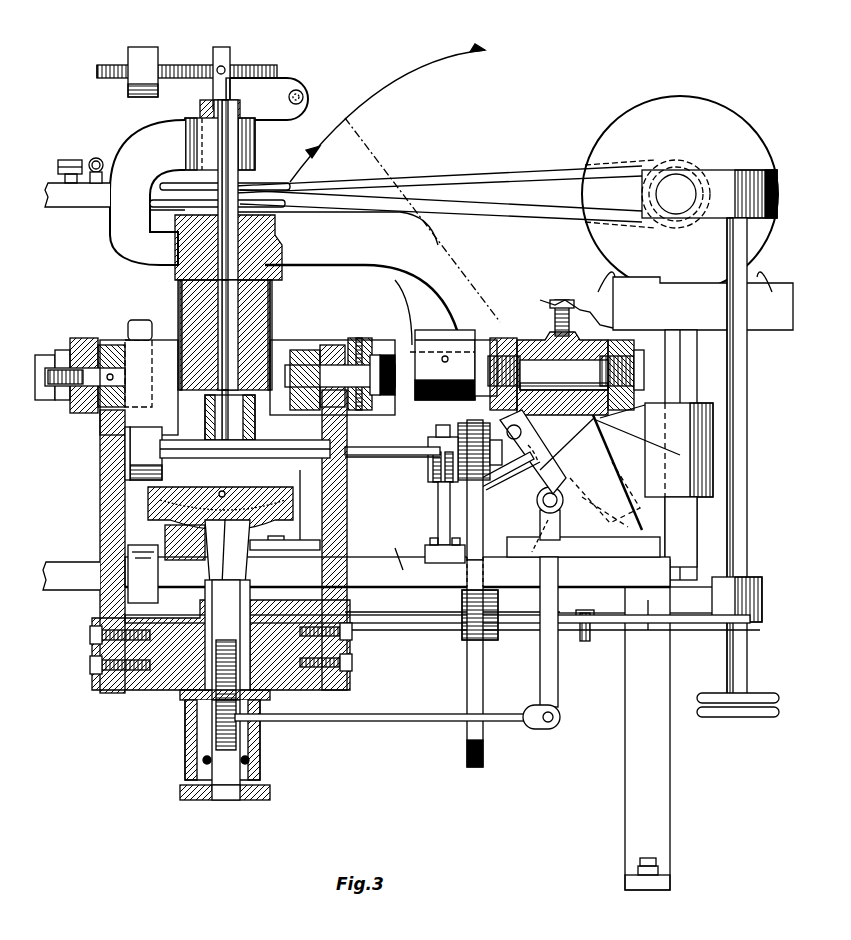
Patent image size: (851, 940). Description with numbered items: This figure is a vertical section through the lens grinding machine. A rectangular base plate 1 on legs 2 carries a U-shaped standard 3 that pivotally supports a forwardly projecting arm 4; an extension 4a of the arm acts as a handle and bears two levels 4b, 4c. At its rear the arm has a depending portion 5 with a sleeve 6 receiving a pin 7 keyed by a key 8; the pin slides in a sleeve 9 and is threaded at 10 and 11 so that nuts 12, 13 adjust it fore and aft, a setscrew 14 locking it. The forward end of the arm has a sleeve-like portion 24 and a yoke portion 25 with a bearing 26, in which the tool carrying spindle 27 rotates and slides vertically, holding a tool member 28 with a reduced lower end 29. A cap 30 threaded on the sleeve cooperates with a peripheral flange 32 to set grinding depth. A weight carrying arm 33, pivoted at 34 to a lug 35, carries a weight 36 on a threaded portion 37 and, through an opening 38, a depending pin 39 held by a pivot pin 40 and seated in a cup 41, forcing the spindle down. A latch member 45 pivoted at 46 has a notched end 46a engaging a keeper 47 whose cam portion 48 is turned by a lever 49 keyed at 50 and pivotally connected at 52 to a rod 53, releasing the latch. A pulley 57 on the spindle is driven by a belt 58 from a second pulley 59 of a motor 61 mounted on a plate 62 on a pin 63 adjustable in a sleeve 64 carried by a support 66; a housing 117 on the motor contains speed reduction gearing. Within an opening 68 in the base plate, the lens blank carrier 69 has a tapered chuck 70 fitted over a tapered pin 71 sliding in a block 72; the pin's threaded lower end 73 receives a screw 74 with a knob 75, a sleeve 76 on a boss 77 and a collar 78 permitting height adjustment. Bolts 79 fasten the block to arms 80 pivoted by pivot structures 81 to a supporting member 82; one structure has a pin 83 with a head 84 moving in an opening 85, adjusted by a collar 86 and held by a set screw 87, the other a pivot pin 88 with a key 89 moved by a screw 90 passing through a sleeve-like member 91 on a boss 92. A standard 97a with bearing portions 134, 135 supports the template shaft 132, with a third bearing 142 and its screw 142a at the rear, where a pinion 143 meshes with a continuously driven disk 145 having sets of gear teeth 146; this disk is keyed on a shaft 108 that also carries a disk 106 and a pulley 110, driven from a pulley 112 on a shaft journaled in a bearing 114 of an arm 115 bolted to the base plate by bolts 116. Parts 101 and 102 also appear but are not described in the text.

The base plate 1 is at (395, 551).
The legs 2 is at (640, 738).
The standard 3 is at (528, 480).
The arm 4 is at (380, 243).
The extension 4a is at (62, 196).
The level 4b is at (95, 158).
The level 4c is at (64, 162).
The depending portion 5 is at (432, 345).
The sleeve 6 is at (440, 375).
The pin 7 is at (484, 368).
The key 8 is at (448, 356).
The sleeve 9 is at (536, 340).
The threaded portion 10 is at (585, 382).
The threaded portion 11 is at (640, 368).
The nut 12 is at (505, 340).
The nut 13 is at (622, 345).
The setscrew 14 is at (562, 300).
The sleeve-like portion 24 is at (270, 279).
The yoke portion 25 is at (132, 222).
The bearing 26 is at (193, 130).
The tool carrying spindle 27 is at (280, 241).
The tool member 28 is at (146, 453).
The reduced cylindrical lower end 29 is at (220, 480).
The cap 30 is at (176, 384).
The peripheral flange 32 is at (218, 398).
The weight carrying arm 33 is at (187, 65).
The pivot 34 is at (300, 90).
The lug 35 is at (287, 125).
The weight 36 is at (143, 56).
The threaded portion 37 is at (106, 66).
The opening 38 is at (238, 64).
The depending pin 39 is at (231, 91).
The pivot pin 40 is at (222, 66).
The cup 41 is at (208, 105).
The latch member 45 is at (540, 462).
The pivot 46 is at (522, 432).
The notched lower end 46a is at (624, 467).
The keeper 47 is at (567, 443).
The cam portion 48 is at (522, 548).
The lever 49 is at (558, 678).
The keyed connection 50 is at (556, 512).
The pivotal connection 52 is at (550, 723).
The rod 53 is at (425, 722).
The pulley 57 is at (175, 207).
The belt 58 is at (470, 185).
The second pulley 59 is at (656, 195).
The electric motor 61 is at (613, 148).
The plate 62 is at (688, 312).
The pin 63 is at (676, 378).
The sleeve 64 is at (700, 435).
The support 66 is at (655, 448).
The opening 68 is at (352, 575).
The lens blank carrier 69 is at (148, 495).
The tapered chuck 70 is at (185, 534).
The tapered pin 71 is at (240, 571).
The block 72 is at (272, 640).
The hollow threaded lower end 73 is at (220, 655).
The screw 74 is at (212, 736).
The knob 75 is at (200, 788).
The sleeve 76 is at (258, 745).
The boss 77 is at (265, 698).
The collar 78 is at (203, 760).
The bolts 79 is at (352, 662).
The arms 80 is at (100, 464).
The pivot structures 81 is at (315, 392).
The supporting member 82 is at (286, 345).
The pin 83 is at (328, 347).
The head 84 is at (310, 372).
The opening 85 is at (372, 398).
The collar 86 is at (390, 395).
The set screw 87 is at (358, 338).
The pivot pin 88 is at (84, 340).
The key 89 is at (112, 348).
The screw 90 is at (52, 388).
The sleeve-like member 91 is at (42, 360).
The boss 92 is at (62, 352).
The standard 97a is at (300, 521).
The bar 101 is at (322, 543).
The cap 102 is at (140, 320).
The disk 106 is at (140, 603).
The shaft 108 is at (405, 616).
The pulley 110 is at (700, 638).
The pulley 112 is at (756, 693).
The bearing 114 is at (762, 594).
The arm 115 is at (652, 626).
The bolts 116 is at (585, 620).
The housing 117 is at (722, 185).
The shaft 132 is at (405, 457).
The bearing portion 134 is at (128, 432).
The bearing portion 135 is at (347, 452).
The third bearing 142 is at (438, 478).
The screw 142a is at (430, 445).
The pinion 143 is at (482, 470).
The disk 145 is at (478, 668).
The gear teeth 146 is at (468, 622).